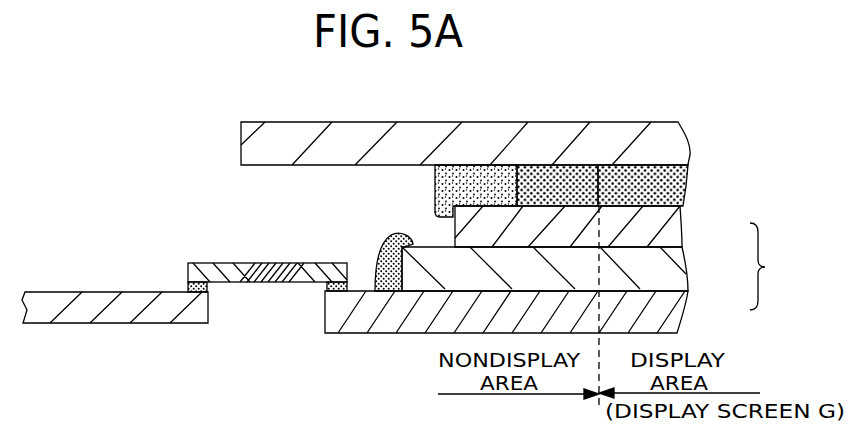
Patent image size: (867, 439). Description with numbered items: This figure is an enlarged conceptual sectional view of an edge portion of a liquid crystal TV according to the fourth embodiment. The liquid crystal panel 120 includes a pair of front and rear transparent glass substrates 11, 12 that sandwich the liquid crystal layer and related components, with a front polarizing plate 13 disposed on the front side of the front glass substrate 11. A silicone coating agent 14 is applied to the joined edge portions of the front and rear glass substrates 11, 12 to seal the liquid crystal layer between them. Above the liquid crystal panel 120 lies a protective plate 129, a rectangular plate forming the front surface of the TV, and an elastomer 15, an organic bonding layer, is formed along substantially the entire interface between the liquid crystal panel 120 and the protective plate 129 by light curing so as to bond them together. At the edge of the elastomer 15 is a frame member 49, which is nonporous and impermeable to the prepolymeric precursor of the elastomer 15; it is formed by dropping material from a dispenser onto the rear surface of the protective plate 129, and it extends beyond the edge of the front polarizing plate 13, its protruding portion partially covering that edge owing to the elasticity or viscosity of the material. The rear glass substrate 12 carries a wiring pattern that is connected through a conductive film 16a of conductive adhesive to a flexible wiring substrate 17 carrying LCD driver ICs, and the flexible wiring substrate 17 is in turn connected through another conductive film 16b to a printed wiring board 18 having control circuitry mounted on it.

The protective plate 129 is at (658, 149).
The elastomer 15 is at (658, 188).
The frame member 49 is at (470, 178).
The front polarizing plate 13 is at (655, 231).
The front transparent glass substrate 11 is at (655, 271).
The rear transparent glass substrate 12 is at (657, 310).
The liquid crystal panel 120 is at (780, 266).
The silicone coating agent 14 is at (392, 240).
The flexible wiring substrate 17 is at (268, 262).
The conductive film 16a is at (330, 289).
The conductive film 16b is at (192, 284).
The printed wiring board 18 is at (147, 325).